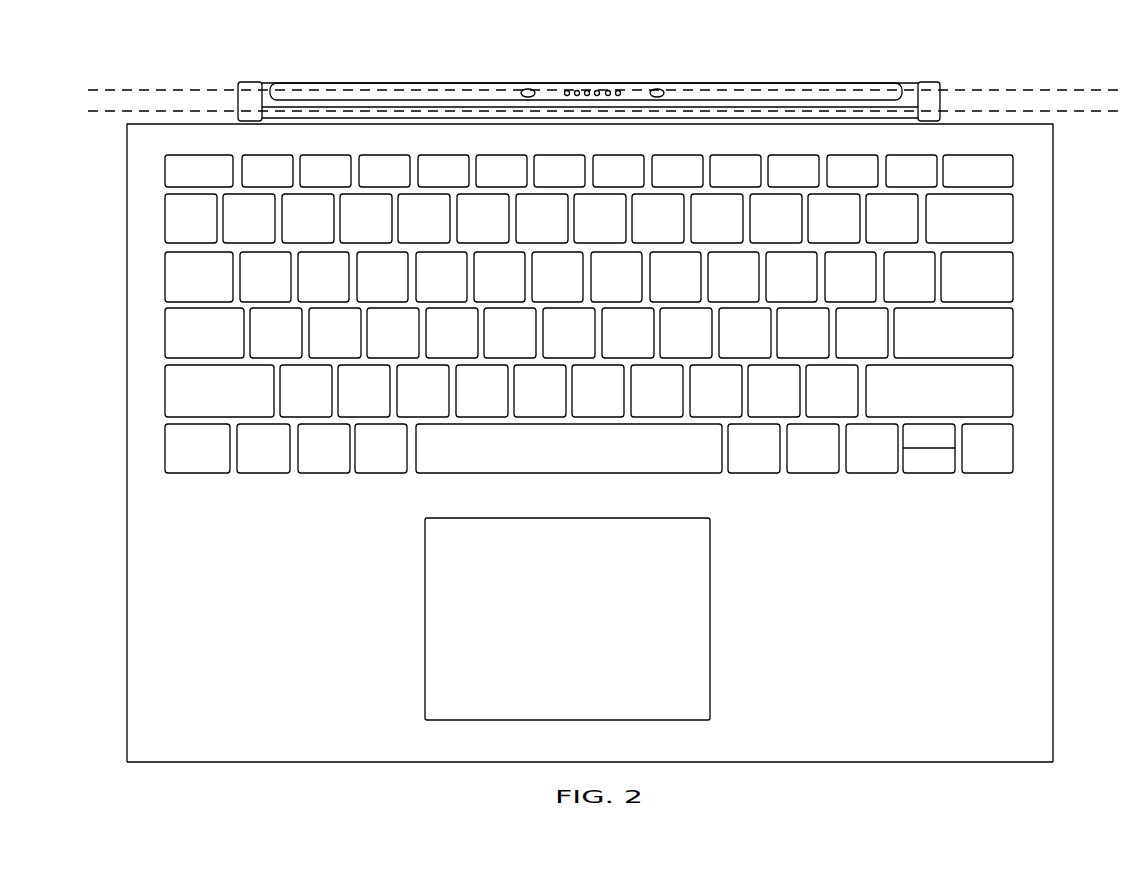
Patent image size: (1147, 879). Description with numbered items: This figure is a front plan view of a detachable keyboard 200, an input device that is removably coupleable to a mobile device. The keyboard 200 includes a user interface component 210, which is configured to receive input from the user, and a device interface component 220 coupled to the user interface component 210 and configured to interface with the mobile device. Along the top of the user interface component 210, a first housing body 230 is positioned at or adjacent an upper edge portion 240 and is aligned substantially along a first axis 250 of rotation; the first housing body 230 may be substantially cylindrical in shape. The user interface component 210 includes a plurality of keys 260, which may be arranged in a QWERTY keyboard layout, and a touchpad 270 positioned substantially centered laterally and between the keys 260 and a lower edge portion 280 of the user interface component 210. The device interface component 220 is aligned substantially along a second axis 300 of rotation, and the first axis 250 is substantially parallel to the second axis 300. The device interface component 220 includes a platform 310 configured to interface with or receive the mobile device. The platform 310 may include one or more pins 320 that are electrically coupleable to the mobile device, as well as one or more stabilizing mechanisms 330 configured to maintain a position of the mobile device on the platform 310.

The detachable keyboard 200 is at (629, 410).
The user interface component 210 is at (606, 453).
The device interface component 220 is at (590, 78).
The first housing body 230 is at (258, 103).
The upper edge portion 240 is at (963, 100).
The first axis of rotation 250 is at (1049, 93).
The keys 260 is at (427, 445).
The touchpad 270 is at (702, 620).
The lower edge portion 280 is at (820, 740).
The second axis of rotation 300 is at (603, 86).
The platform 310 is at (888, 70).
The pins 320 is at (600, 70).
The stabilizing mechanisms 330 is at (531, 68).